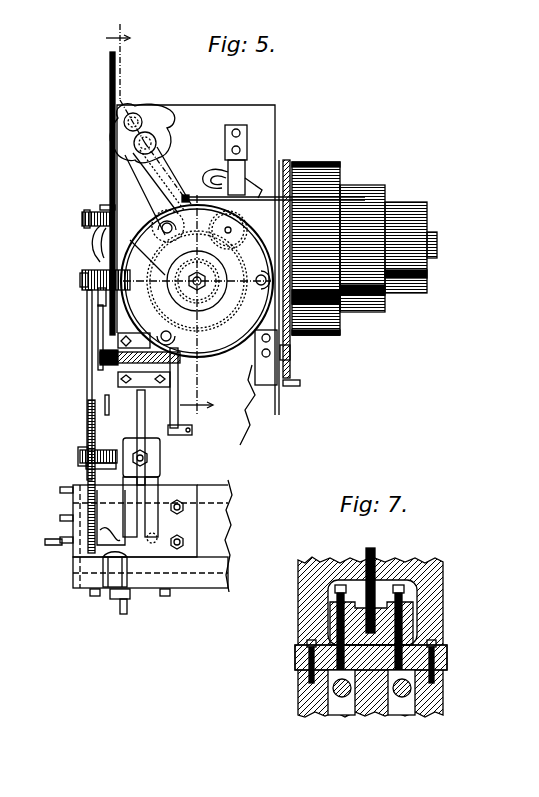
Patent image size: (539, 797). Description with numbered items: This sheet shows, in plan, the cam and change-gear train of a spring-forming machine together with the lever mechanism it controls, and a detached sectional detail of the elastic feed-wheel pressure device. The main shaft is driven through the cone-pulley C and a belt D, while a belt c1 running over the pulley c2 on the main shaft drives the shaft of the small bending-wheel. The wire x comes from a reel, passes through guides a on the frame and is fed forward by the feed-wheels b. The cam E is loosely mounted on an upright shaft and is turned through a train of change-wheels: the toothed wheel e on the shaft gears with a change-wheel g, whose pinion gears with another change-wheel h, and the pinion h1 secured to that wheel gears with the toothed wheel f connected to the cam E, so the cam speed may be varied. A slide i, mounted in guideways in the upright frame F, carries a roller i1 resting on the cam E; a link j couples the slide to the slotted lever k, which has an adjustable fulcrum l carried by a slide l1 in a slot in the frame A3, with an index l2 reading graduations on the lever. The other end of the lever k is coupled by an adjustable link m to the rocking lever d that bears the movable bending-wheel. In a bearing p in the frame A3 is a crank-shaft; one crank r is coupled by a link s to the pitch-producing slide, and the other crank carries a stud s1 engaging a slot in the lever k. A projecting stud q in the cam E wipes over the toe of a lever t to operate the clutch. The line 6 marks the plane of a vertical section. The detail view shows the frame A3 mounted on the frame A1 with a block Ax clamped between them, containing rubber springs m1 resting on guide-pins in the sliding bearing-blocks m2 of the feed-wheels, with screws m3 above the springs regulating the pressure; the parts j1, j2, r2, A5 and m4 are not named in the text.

In FIG. 5, the section line 6 is at (159, 219).
In FIG. 5, the frame A3 is at (110, 190).
In FIG. 5, the wire x is at (118, 119).
In FIG. 5, the change-wheel h is at (165, 215).
In FIG. 5, the pinion h1 is at (185, 195).
In FIG. 5, the bracket j1 is at (246, 190).
In FIG. 5, the cam E is at (215, 345).
In FIG. 5, the toothed wheel e is at (197, 281).
In FIG. 5, the stud or pin q is at (199, 281).
In FIG. 5, the roller i1 is at (178, 270).
In FIG. 5, the change-wheel g is at (232, 262).
In FIG. 5, the toothed wheel f is at (145, 290).
In FIG. 5, the sheave or pulley c2 is at (287, 165).
In FIG. 5, the belt c1 is at (290, 352).
In FIG. 5, the cone-pulley C is at (364, 248).
In FIG. 5, the cylinder section j2 is at (340, 200).
In FIG. 5, the belt D is at (330, 336).
In FIG. 5, the lever t is at (290, 388).
In FIG. 5, the guides a is at (112, 207).
In FIG. 5, the feed-wheels b is at (88, 222).
In FIG. 5, the upright frame F is at (98, 252).
In FIG. 5, the link j is at (82, 278).
In FIG. 5, the slide i is at (98, 292).
In FIG. 5, the stud s1 is at (98, 325).
In FIG. 5, the bar r2 is at (100, 356).
In FIG. 5, the slotted lever k is at (88, 391).
In FIG. 5, the link s is at (190, 432).
In FIG. 5, the bearing p is at (144, 388).
In FIG. 5, the crank r is at (252, 365).
In FIG. 5, the fulcrum l is at (80, 455).
In FIG. 5, the index or point l2 is at (86, 468).
In FIG. 5, the slide l1 is at (152, 460).
In FIG. 5, the rocking lever d is at (105, 508).
In FIG. 5, the adjustable link m is at (95, 560).
In FIG. 7, the frame A1 is at (298, 698).
In FIG. 7, the cavity A5 is at (343, 612).
In FIG. 7, the block Ax is at (447, 656).
In FIG. 7, the block m4 is at (445, 627).
In FIG. 7, the screws m3 is at (333, 585).
In FIG. 7, the rubber springs m1 is at (325, 632).
In FIG. 7, the sliding bearing-blocks m2 is at (340, 708).